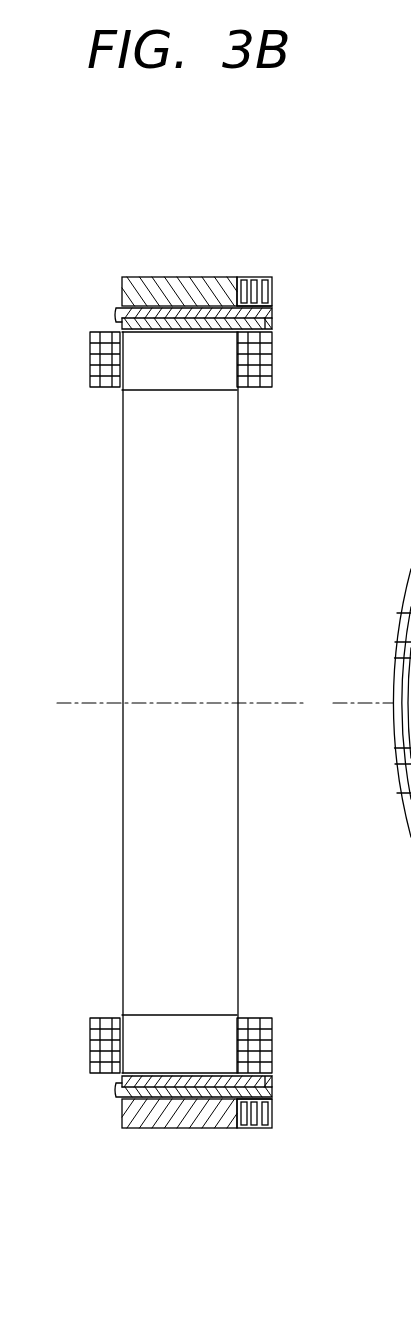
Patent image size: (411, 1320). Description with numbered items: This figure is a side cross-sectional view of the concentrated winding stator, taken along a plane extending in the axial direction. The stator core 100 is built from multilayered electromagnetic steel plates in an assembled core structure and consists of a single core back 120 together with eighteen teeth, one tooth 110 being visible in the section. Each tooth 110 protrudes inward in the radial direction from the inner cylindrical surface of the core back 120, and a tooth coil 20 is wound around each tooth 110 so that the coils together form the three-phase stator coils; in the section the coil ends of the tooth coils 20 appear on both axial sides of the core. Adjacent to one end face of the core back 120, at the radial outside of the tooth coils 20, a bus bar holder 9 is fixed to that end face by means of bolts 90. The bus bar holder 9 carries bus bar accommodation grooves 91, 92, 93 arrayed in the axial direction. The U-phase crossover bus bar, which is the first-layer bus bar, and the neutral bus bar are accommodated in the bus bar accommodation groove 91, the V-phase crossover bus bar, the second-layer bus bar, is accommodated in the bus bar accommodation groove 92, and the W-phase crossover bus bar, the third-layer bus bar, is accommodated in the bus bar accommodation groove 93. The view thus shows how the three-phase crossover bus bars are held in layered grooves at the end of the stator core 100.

The bus bar holder 9 is at (292, 287).
The tooth coils 20 is at (292, 360).
The bolts 90 is at (116, 312).
The bus bar accommodation groove 91 is at (241, 277).
The bus bar accommodation groove 92 is at (255, 277).
The bus bar accommodation groove 93 is at (263, 277).
The stator core 100 is at (246, 596).
The tooth 110 is at (178, 377).
The core back 120 is at (168, 277).